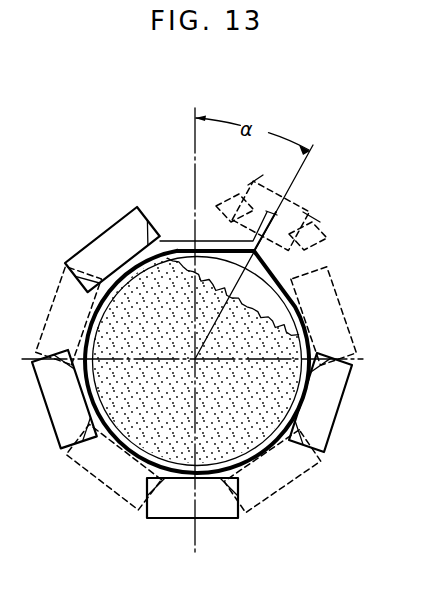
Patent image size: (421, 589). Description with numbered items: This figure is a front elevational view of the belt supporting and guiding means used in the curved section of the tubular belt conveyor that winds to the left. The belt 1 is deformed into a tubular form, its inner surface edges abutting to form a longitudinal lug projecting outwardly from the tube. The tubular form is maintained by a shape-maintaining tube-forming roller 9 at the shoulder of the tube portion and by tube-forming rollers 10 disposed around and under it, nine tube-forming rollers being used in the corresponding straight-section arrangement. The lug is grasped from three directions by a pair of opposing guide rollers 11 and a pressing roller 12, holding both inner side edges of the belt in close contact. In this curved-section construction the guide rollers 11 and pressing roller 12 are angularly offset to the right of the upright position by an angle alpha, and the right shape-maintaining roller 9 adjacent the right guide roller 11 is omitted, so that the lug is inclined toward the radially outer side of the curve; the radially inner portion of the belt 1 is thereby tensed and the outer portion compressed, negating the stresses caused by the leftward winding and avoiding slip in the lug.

The belt 1 is at (185, 246).
The tube-forming roller 9 is at (105, 237).
The tube-forming rollers 10 is at (56, 283).
The guide rollers 11 is at (222, 196).
The pressing roller 12 is at (307, 190).